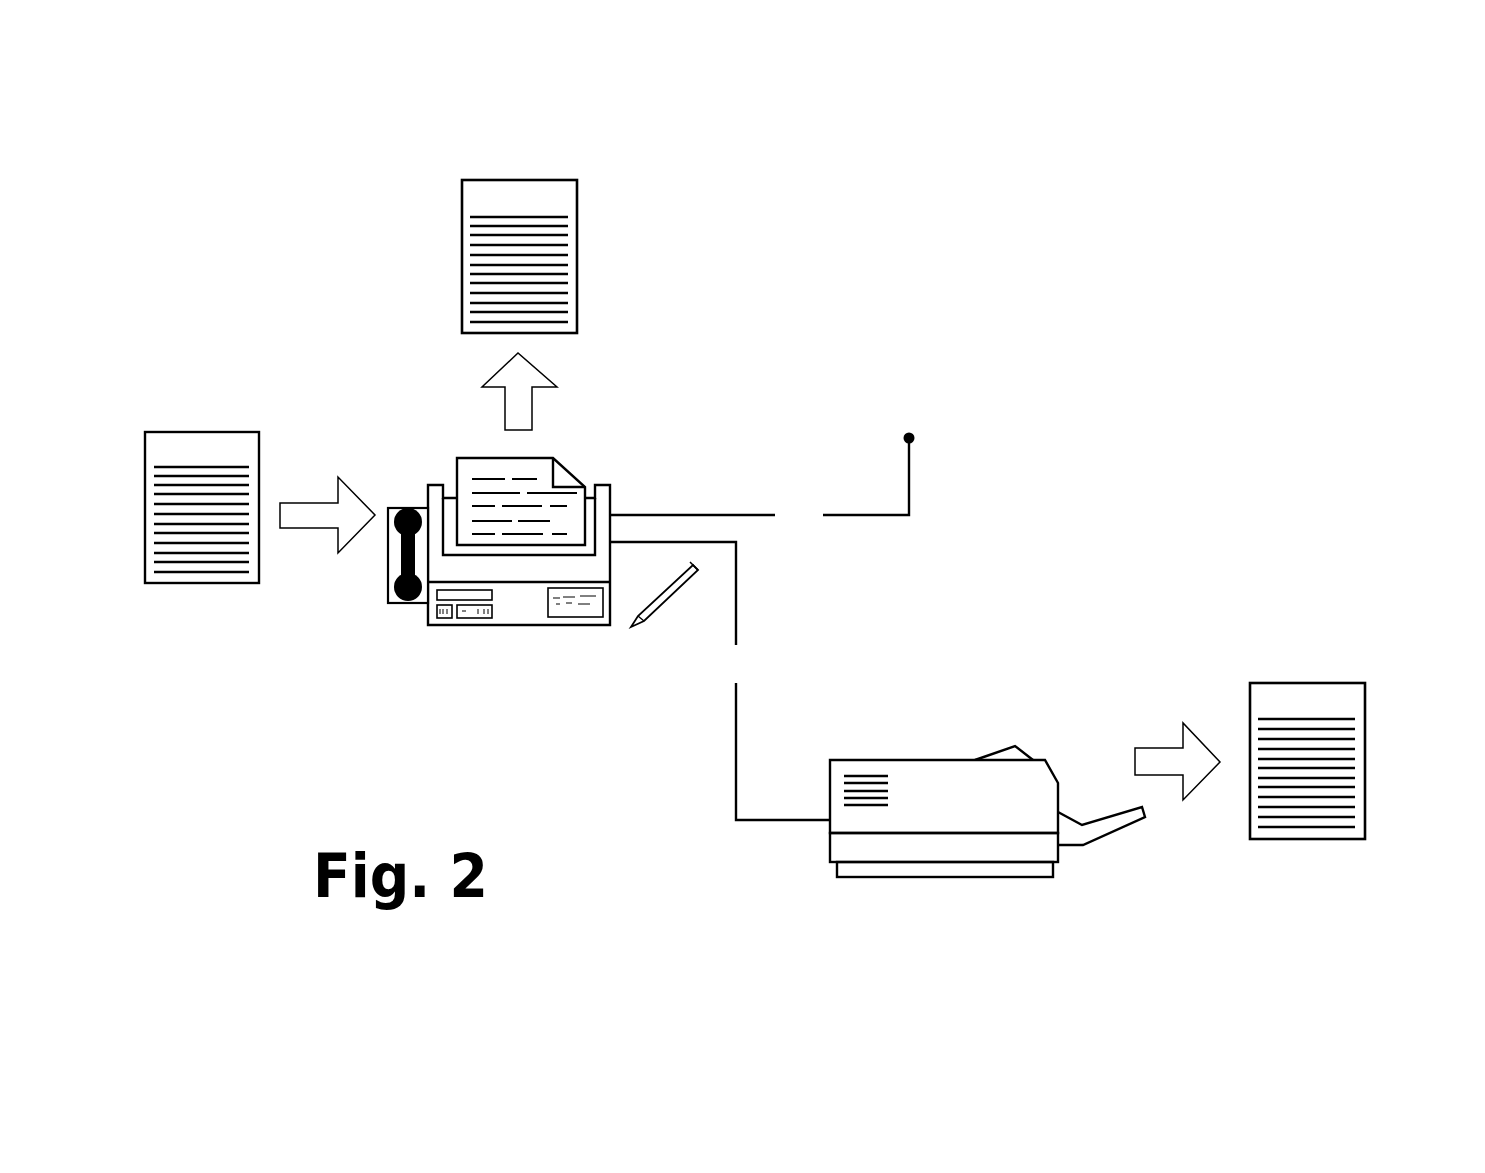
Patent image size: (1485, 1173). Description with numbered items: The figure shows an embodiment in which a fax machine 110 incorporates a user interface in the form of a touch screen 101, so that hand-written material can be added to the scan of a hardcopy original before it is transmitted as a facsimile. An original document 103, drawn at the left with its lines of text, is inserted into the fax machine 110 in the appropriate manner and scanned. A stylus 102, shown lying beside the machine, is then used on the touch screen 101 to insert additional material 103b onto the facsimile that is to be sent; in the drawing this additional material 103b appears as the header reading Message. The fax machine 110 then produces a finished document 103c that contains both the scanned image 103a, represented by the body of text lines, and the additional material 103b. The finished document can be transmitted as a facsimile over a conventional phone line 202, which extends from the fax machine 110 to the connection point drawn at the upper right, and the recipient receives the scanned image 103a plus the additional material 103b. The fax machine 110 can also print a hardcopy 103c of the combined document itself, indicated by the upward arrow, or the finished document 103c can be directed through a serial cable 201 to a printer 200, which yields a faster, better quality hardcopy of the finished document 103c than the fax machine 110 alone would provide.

The original document 103 is at (170, 449).
The scanned image 103a is at (558, 253).
The additional material 103b is at (518, 198).
The finished document 103c is at (442, 296).
The fax machine 110 is at (503, 626).
The touch screen 101 is at (577, 608).
The stylus 102 is at (668, 600).
The serial cable 201 is at (720, 681).
The phone line 202 is at (762, 481).
The printer 200 is at (945, 782).